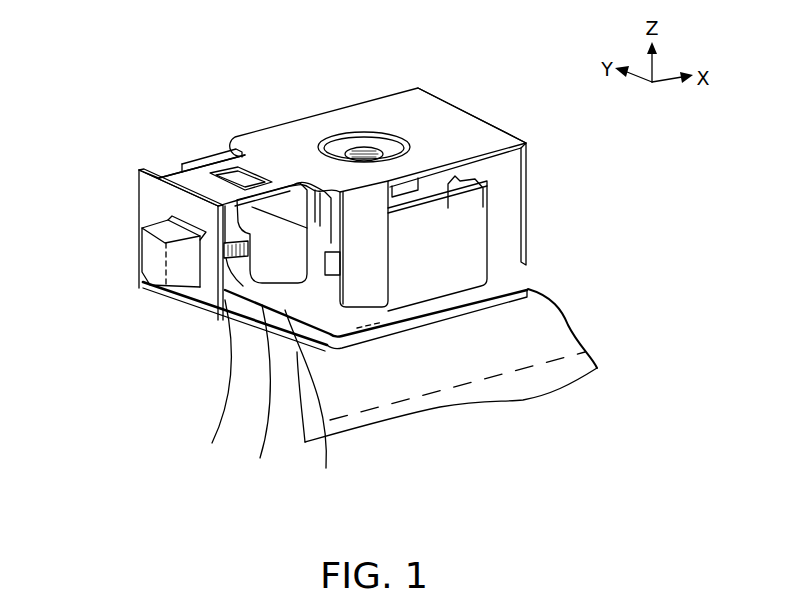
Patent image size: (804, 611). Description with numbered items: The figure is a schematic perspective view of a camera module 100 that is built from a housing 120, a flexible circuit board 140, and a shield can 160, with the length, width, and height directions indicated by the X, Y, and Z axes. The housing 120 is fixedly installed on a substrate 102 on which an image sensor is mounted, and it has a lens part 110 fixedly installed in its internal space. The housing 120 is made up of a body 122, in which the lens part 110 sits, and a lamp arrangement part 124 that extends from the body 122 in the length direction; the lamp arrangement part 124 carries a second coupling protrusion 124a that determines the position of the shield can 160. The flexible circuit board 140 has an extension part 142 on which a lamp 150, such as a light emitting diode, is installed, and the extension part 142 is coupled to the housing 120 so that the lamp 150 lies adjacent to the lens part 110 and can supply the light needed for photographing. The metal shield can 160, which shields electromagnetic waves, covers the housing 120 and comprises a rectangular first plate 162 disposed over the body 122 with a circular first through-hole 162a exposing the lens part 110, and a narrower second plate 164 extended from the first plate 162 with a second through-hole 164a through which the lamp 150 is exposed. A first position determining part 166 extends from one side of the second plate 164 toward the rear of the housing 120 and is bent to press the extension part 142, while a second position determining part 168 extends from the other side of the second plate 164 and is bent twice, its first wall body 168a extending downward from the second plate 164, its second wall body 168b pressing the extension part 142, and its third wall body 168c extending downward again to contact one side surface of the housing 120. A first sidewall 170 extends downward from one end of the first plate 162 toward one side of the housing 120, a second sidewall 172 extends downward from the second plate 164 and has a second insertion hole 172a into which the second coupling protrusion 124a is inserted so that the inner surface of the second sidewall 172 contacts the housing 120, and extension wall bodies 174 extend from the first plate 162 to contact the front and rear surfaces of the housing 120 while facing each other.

The camera module 100 is at (381, 33).
The substrate 102 is at (395, 300).
The lens part 110 is at (393, 128).
The housing 120 is at (648, 205).
The body 122 is at (448, 224).
The lamp arrangement part 124 is at (255, 272).
The second coupling protrusion 124a is at (187, 263).
The flexible circuit board 140 is at (520, 357).
The extension part 142 is at (157, 300).
The lamp 150 is at (218, 173).
The shield can 160 is at (490, 114).
The first plate 162 is at (308, 122).
The first through-hole 162a is at (356, 126).
The second plate 164 is at (185, 185).
The second through-hole 164a is at (228, 177).
The first position determining part 166 is at (187, 172).
The second position determining part 168 is at (208, 473).
The first wall body 168a is at (208, 387).
The second wall body 168b is at (266, 397).
The third wall body 168c is at (321, 404).
The first sidewall 170 is at (513, 178).
The second sidewall 172 is at (147, 207).
The second insertion hole 172a is at (147, 227).
The extension wall bodies 174 is at (372, 298).